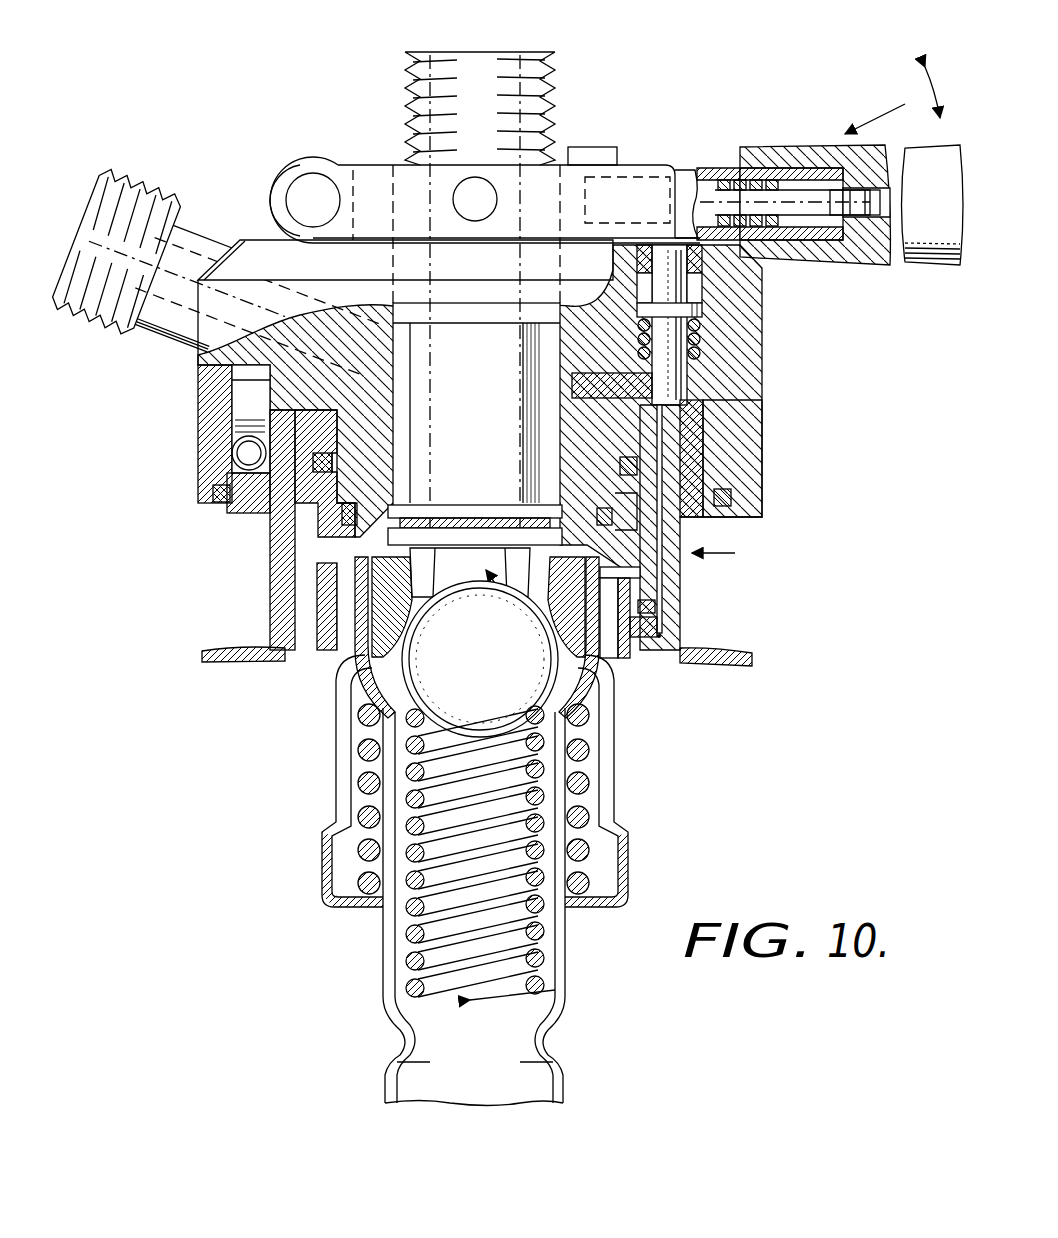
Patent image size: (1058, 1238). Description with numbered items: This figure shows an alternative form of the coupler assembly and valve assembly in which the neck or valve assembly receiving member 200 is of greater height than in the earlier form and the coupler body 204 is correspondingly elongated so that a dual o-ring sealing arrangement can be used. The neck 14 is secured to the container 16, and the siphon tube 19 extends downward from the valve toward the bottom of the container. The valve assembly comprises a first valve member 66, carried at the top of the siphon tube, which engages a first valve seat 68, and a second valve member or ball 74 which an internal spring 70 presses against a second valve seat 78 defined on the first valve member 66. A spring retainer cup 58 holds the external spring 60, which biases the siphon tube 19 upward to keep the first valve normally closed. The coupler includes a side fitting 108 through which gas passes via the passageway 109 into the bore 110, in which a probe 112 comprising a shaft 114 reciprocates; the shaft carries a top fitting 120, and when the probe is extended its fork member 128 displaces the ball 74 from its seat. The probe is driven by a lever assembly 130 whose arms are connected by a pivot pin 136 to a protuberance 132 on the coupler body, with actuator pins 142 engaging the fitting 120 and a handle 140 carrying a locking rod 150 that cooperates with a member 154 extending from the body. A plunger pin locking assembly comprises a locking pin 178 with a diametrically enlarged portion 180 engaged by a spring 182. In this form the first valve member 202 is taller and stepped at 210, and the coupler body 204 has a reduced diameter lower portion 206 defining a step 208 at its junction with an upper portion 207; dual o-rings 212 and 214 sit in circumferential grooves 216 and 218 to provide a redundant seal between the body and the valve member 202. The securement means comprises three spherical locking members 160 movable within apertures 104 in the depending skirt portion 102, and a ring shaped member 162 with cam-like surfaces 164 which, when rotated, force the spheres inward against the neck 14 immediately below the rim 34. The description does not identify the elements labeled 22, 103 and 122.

The valve assembly receiving member 14 is at (700, 470).
The container 16 is at (745, 658).
The siphon tube 19 is at (562, 953).
The fluid passage 22 is at (650, 626).
The upper rim 34 is at (695, 432).
The spring retainer cup 58 is at (615, 712).
The helical compression external spring 60 is at (590, 752).
The first valve member 66 is at (348, 665).
The first valve seat 68 is at (320, 590).
The internal spring 70 is at (545, 790).
The second valve member 74 is at (480, 659).
The second valve seat 78 is at (547, 640).
The skirt portion 102 is at (232, 420).
The O-ring seal 103 is at (213, 493).
The apertures 104 is at (235, 470).
The side fitting 108 is at (133, 170).
The passageway 109 is at (327, 302).
The bore 110 is at (540, 352).
The probe 112 is at (466, 415).
The shaft 114 is at (458, 325).
The top fitting 120 is at (557, 72).
The bolt head 122 is at (432, 62).
The fork member 128 is at (448, 590).
The lever assembly 130 is at (801, 171).
The protuberance 132 is at (288, 158).
The pivot pin 136 is at (298, 188).
The handle 140 is at (945, 262).
The actuator pins 142 is at (460, 200).
The locking rod 150 is at (700, 180).
The member 154 is at (595, 147).
The spherical members 160 is at (238, 456).
The ring shaped member 162 is at (725, 447).
The cam-like surfaces 164 is at (232, 447).
The locking pin 178 is at (660, 372).
The diametrically enlarged portion 180 is at (702, 308).
The spring 182 is at (702, 333).
The valve assembly receiving member 200 is at (718, 521).
The first valve member 202 is at (640, 572).
The coupler body 204 is at (560, 408).
The reduced diameter lower portion 206 is at (282, 555).
The upper portion 207 is at (262, 518).
The step 208 is at (300, 540).
The step 210 is at (622, 486).
The o-ring 212 is at (385, 520).
The o-ring 214 is at (375, 475).
The circumferential groove 216 is at (380, 495).
The circumferential groove 218 is at (372, 455).